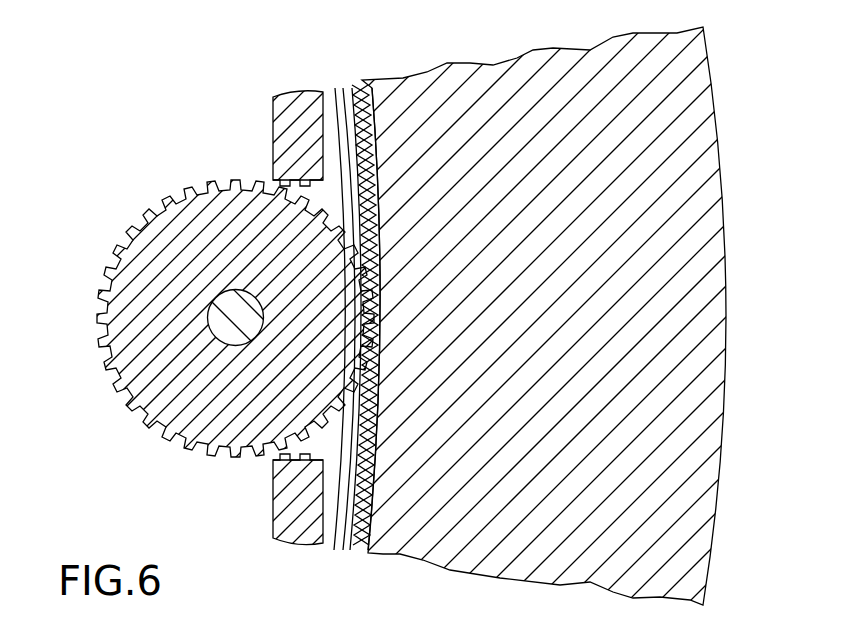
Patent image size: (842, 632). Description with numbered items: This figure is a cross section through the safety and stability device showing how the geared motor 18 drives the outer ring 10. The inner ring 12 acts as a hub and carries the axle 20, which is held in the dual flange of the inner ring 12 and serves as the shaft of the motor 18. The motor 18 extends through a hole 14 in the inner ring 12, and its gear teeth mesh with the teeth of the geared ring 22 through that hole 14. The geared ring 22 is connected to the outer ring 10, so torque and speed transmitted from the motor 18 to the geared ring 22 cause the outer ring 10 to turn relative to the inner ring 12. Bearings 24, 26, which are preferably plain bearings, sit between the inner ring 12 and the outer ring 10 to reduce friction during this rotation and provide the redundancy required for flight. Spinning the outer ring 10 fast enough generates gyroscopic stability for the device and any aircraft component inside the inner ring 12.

The outer ring 10 is at (700, 302).
The inner ring 12 is at (285, 107).
The hole 14 is at (270, 181).
The motor 18 is at (107, 277).
The axle 20 is at (212, 321).
The geared ring 22 is at (358, 82).
The bearing 24 is at (323, 92).
The bearing 26 is at (336, 88).